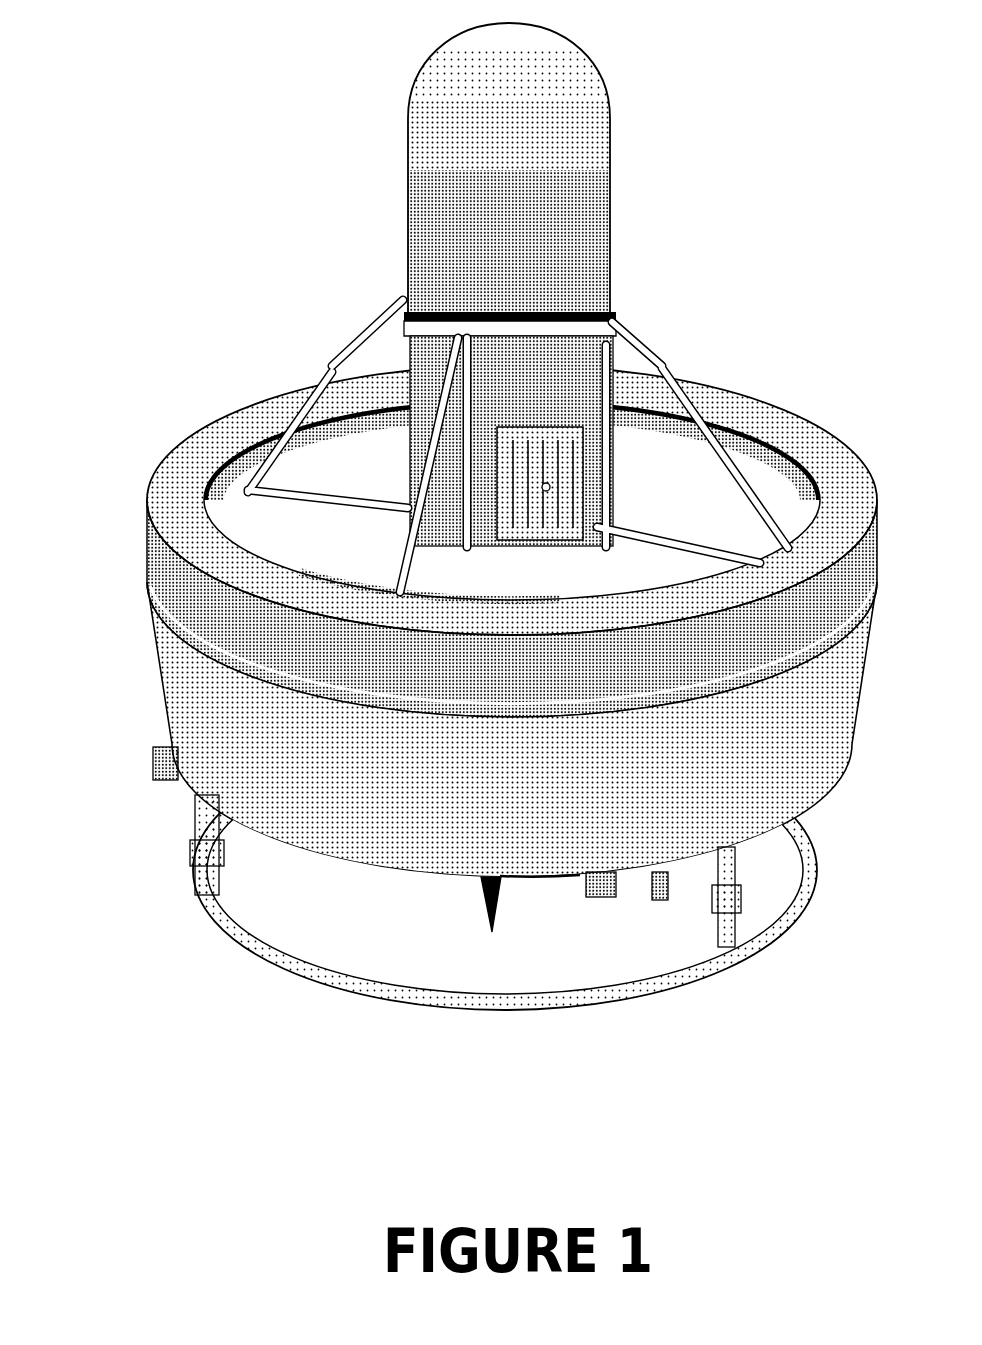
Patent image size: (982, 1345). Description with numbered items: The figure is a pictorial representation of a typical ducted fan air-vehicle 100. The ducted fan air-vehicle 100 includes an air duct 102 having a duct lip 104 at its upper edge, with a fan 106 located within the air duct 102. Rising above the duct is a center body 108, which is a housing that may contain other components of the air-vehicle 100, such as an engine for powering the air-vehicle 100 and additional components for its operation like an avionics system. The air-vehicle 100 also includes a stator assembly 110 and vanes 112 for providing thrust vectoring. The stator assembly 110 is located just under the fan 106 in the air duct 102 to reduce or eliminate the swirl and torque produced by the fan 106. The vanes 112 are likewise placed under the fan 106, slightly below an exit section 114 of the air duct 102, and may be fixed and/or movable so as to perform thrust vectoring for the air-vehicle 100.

The ducted fan air-vehicle 100 is at (453, 546).
The air duct 102 is at (148, 608).
The duct lip 104 is at (733, 378).
The fan 106 is at (237, 528).
The center body 108 is at (543, 55).
The stator assembly 110 is at (336, 889).
The vanes 112 is at (491, 948).
The exit section 114 is at (533, 885).